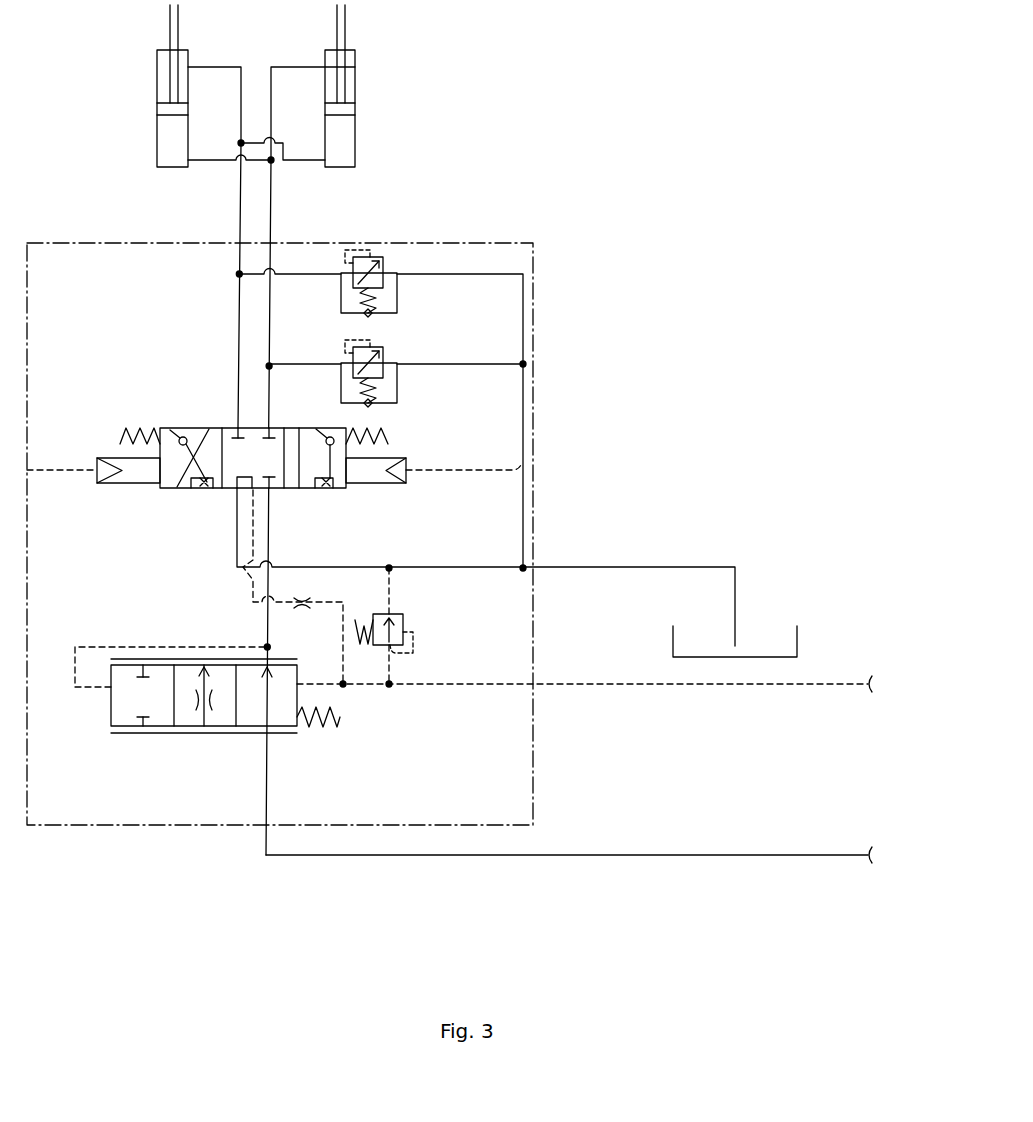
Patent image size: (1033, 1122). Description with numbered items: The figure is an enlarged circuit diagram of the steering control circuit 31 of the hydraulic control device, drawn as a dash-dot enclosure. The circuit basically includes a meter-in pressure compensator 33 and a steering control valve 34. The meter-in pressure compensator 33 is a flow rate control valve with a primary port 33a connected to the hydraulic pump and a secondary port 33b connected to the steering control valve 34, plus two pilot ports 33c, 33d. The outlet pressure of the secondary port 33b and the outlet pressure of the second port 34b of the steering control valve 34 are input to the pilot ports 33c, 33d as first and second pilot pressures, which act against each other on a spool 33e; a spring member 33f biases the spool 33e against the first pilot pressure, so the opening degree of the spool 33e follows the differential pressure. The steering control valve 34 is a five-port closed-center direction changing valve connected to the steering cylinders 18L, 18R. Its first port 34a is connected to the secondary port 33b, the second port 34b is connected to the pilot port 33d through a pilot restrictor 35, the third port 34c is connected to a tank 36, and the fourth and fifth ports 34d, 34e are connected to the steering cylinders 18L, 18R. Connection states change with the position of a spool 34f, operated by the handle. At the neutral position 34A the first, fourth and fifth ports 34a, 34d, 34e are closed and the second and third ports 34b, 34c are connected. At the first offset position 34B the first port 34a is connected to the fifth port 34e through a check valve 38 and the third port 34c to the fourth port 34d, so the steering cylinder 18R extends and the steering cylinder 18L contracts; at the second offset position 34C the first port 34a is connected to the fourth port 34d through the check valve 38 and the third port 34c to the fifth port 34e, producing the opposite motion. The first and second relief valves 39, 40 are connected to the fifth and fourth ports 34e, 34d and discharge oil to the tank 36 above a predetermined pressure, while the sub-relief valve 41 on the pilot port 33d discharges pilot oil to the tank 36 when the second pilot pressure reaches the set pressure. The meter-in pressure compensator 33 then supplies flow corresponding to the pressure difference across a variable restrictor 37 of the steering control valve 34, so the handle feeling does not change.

The steering cylinder 18L is at (158, 66).
The steering cylinder 18R is at (354, 64).
The steering control circuit 31 is at (513, 245).
The meter-in pressure compensator 33 is at (120, 726).
The primary port 33a is at (268, 733).
The secondary port 33b is at (270, 653).
The pilot port 33c is at (111, 688).
The pilot port 33d is at (297, 683).
The spool 33e is at (188, 720).
The spring member 33f is at (325, 720).
The steering control valve 34 is at (165, 489).
The neutral position 34A is at (275, 490).
The first offset position 34B is at (170, 433).
The second offset position 34C is at (338, 490).
The first port 34a is at (270, 492).
The second port 34b is at (250, 492).
The third port 34c is at (238, 492).
The fourth port 34d is at (270, 427).
The fifth port 34e is at (235, 425).
The spool 34f is at (167, 470).
The pilot restrictor 35 is at (305, 603).
The tank 36 is at (765, 633).
The variable restrictor 37 is at (215, 490).
The check valve 38 is at (187, 428).
The first relief valve 39 is at (382, 262).
The second relief valve 40 is at (382, 352).
The sub-relief valve 41 is at (403, 620).